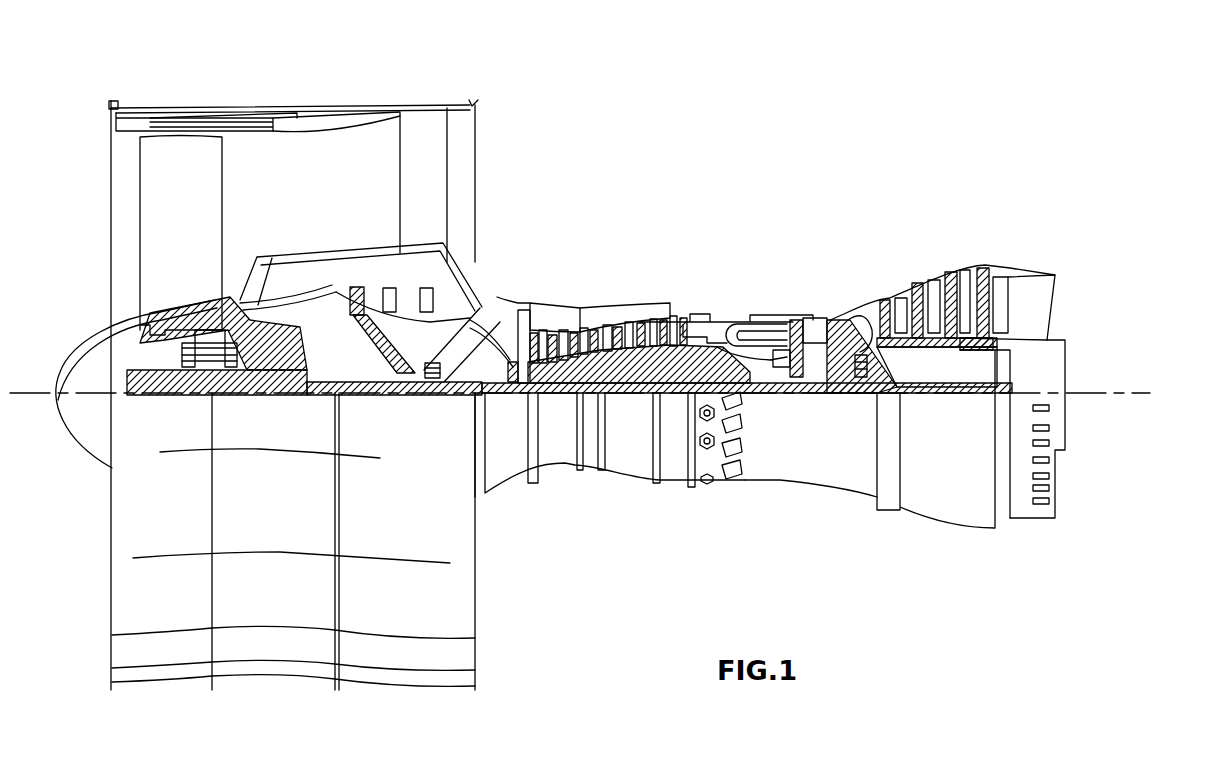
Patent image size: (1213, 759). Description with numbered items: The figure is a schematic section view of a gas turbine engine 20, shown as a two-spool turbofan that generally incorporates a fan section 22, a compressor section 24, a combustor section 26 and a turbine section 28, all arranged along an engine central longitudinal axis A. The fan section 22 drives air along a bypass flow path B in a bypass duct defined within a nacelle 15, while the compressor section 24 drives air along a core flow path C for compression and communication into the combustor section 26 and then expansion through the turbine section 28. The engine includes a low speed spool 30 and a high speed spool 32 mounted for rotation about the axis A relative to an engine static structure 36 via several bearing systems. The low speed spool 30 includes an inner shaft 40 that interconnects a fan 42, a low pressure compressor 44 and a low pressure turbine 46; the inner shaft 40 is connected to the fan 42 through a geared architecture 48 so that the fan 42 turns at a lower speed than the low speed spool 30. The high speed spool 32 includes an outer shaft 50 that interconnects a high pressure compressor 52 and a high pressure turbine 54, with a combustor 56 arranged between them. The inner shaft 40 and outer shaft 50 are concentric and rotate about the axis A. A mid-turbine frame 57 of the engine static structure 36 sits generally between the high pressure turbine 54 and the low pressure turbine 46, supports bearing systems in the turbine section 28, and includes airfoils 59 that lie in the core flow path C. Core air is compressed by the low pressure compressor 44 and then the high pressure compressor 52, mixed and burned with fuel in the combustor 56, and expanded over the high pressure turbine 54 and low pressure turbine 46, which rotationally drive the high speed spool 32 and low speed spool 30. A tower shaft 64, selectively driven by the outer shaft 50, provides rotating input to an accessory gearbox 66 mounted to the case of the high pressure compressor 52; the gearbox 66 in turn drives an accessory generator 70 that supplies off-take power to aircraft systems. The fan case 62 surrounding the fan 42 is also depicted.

The gas turbine engine 20 is at (758, 150).
The fan section 22 is at (225, 100).
The nacelle 15 is at (297, 108).
The fan case 62 is at (433, 162).
The fan 42 is at (197, 236).
The low pressure compressor 44 is at (397, 298).
The compressor section 24 is at (610, 283).
The combustor section 26 is at (746, 304).
The turbine section 28 is at (946, 360).
The low pressure turbine 46 is at (937, 287).
The tower shaft 64 is at (481, 307).
The accessory gearbox 66 is at (533, 322).
The accessory generator 70 is at (568, 306).
The high pressure compressor 52 is at (606, 363).
The high speed spool 32 is at (674, 350).
The combustor 56 is at (752, 333).
The mid-turbine frame 57 is at (862, 297).
The high pressure turbine 54 is at (814, 312).
The airfoils 59 is at (858, 330).
The outer shaft 50 is at (748, 375).
The geared architecture 48 is at (300, 374).
The inner shaft 40 is at (494, 400).
The low speed spool 30 is at (630, 400).
The engine static structure 36 is at (673, 485).
The engine central longitudinal axis A is at (1146, 393).
The bypass flow path B is at (250, 185).
The core flow path C is at (288, 290).